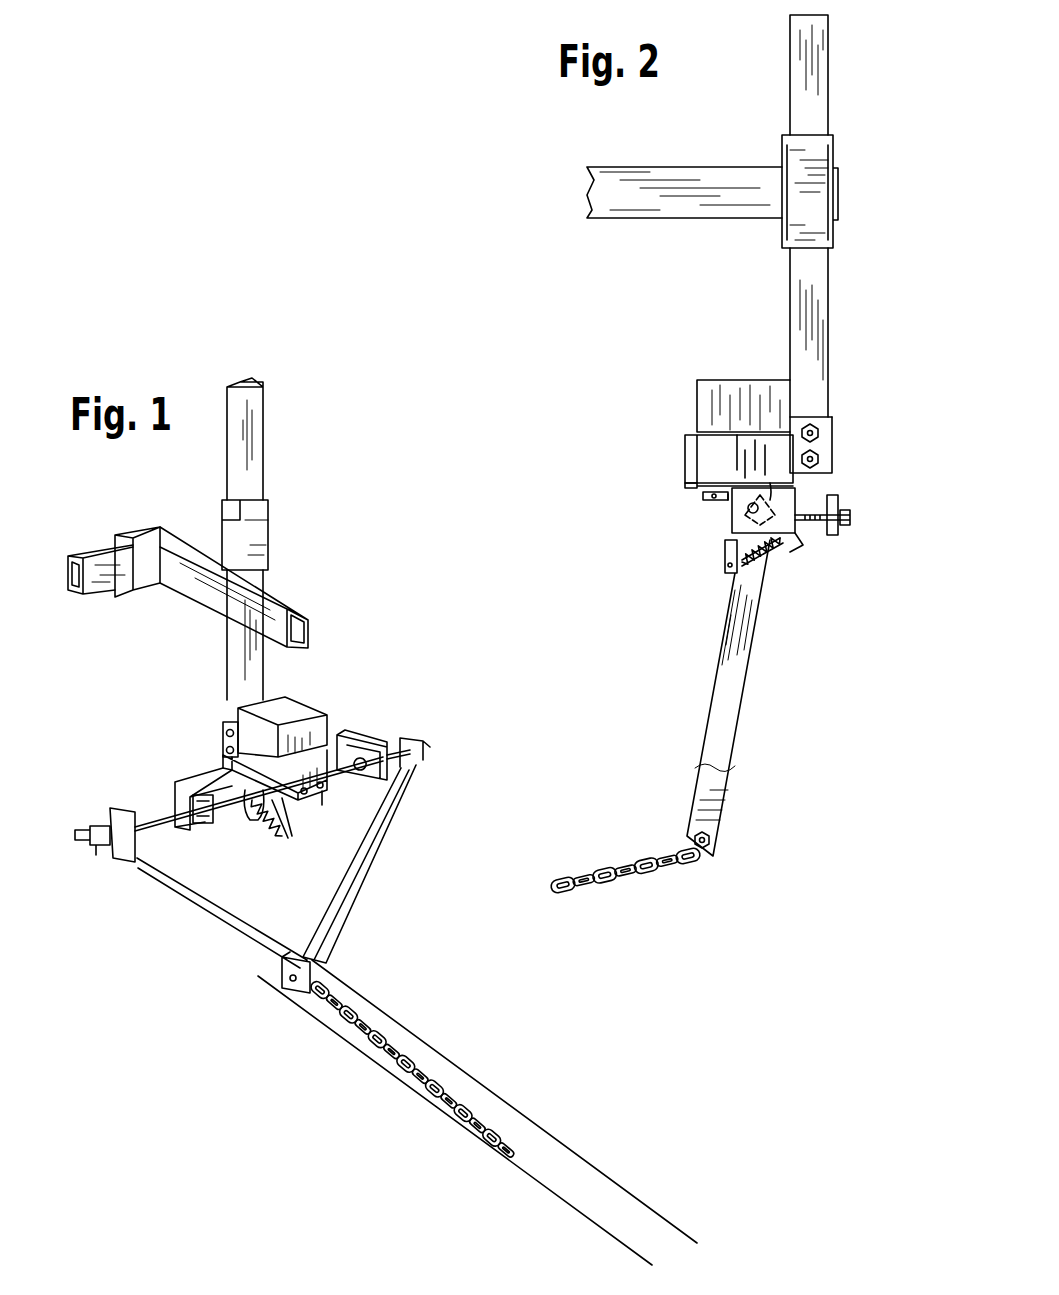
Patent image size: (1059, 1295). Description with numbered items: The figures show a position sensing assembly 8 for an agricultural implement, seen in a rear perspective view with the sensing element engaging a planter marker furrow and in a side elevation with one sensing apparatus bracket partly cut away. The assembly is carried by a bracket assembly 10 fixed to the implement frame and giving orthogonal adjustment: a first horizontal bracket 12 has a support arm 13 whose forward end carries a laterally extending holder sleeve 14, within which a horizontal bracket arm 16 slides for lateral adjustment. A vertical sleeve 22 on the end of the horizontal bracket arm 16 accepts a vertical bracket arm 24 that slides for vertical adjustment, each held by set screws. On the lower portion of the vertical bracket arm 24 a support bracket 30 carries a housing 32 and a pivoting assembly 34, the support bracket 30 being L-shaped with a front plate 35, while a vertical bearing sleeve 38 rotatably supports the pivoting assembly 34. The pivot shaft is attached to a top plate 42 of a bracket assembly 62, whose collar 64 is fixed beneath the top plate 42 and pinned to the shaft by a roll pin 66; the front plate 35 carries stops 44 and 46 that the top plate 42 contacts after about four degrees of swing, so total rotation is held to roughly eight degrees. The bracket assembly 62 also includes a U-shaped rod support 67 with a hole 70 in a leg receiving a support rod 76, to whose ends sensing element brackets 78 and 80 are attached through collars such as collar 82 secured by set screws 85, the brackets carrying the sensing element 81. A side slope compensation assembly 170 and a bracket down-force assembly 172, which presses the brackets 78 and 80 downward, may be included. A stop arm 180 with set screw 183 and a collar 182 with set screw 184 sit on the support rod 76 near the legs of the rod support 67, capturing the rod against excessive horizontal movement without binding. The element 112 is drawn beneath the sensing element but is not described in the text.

In FIG. 1, the position sensing assembly 8 is at (322, 665).
In FIG. 1, the bracket assembly 10 is at (275, 520).
In FIG. 1, the first horizontal bracket 12 is at (260, 587).
In FIG. 1, the support arm 13 is at (292, 616).
In FIG. 1, the holder sleeve 14 is at (145, 535).
In FIG. 1, the horizontal bracket arm 16 is at (97, 556).
In FIG. 1, the vertical sleeve 22 is at (268, 545).
In FIG. 1, the vertical bracket arm 24 is at (258, 428).
In FIG. 1, the support bracket 30 is at (237, 720).
In FIG. 2, the support bracket 30 is at (760, 438).
In FIG. 1, the housing 32 is at (290, 706).
In FIG. 1, the pivoting assembly 34 is at (210, 744).
In FIG. 1, the front plate 35 is at (320, 740).
In FIG. 2, the front plate 35 is at (690, 455).
In FIG. 2, the vertical bearing sleeve 38 is at (717, 432).
In FIG. 2, the top plate 42 is at (770, 490).
In FIG. 1, the stop 44 is at (312, 800).
In FIG. 1, the stop 46 is at (327, 796).
In FIG. 2, the stop 46 is at (690, 484).
In FIG. 1, the bracket assembly 62 is at (205, 760).
In FIG. 2, the bracket assembly 62 is at (710, 572).
In FIG. 2, the collar 64 is at (703, 494).
In FIG. 2, the roll pin 66 is at (715, 505).
In FIG. 1, the U-shaped rod support 67 is at (177, 797).
In FIG. 2, the hole 70 is at (745, 512).
In FIG. 1, the support rod 76 is at (160, 815).
In FIG. 1, the sensing element bracket 78 is at (205, 915).
In FIG. 2, the sensing element bracket 78 is at (740, 655).
In FIG. 1, the sensing element bracket 80 is at (410, 795).
In FIG. 1, the sensing element 81 is at (440, 1095).
In FIG. 2, the sensing element 81 is at (635, 890).
In FIG. 1, the collar 82 is at (103, 830).
In FIG. 1, the set screw 85 is at (115, 852).
In FIG. 1, the trailer tongue 112 is at (578, 1147).
In FIG. 2, the side slope compensation assembly 170 is at (825, 545).
In FIG. 1, the bracket down-force assembly 172 is at (285, 880).
In FIG. 1, the stop arm 180 is at (360, 800).
In FIG. 2, the stop arm 180 is at (785, 540).
In FIG. 1, the collar 182 is at (215, 822).
In FIG. 1, the set screw 183 is at (390, 745).
In FIG. 1, the set screw 184 is at (233, 822).